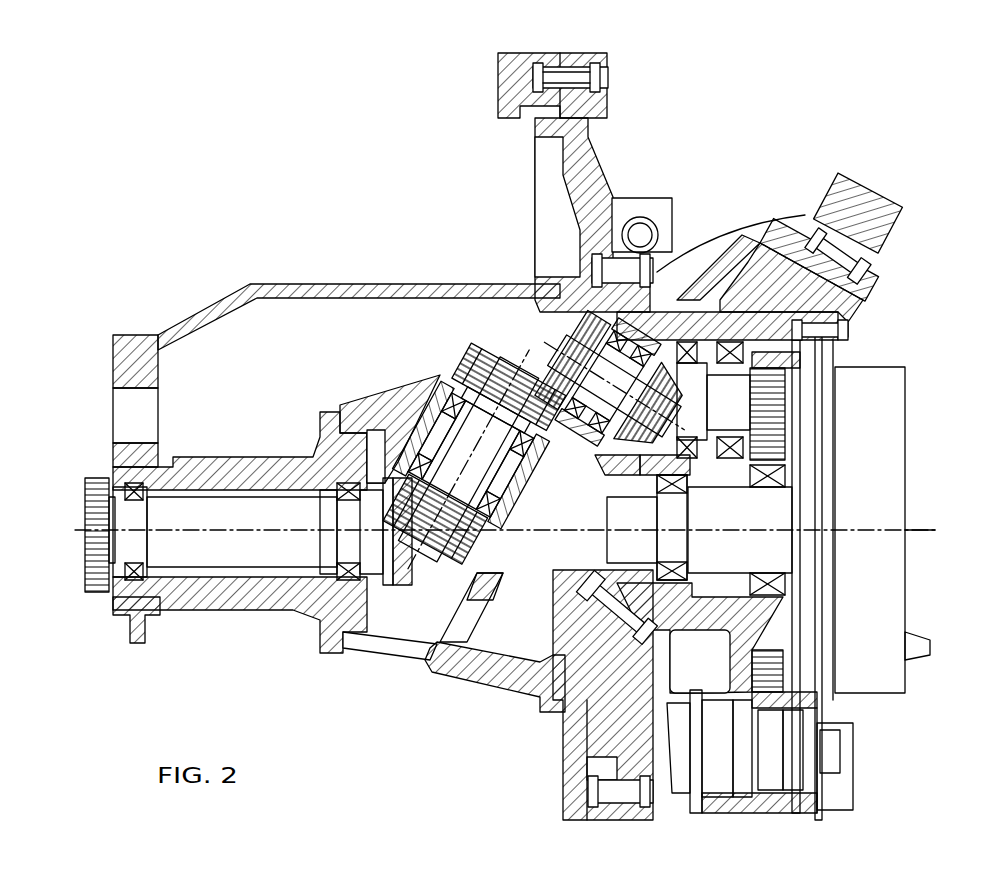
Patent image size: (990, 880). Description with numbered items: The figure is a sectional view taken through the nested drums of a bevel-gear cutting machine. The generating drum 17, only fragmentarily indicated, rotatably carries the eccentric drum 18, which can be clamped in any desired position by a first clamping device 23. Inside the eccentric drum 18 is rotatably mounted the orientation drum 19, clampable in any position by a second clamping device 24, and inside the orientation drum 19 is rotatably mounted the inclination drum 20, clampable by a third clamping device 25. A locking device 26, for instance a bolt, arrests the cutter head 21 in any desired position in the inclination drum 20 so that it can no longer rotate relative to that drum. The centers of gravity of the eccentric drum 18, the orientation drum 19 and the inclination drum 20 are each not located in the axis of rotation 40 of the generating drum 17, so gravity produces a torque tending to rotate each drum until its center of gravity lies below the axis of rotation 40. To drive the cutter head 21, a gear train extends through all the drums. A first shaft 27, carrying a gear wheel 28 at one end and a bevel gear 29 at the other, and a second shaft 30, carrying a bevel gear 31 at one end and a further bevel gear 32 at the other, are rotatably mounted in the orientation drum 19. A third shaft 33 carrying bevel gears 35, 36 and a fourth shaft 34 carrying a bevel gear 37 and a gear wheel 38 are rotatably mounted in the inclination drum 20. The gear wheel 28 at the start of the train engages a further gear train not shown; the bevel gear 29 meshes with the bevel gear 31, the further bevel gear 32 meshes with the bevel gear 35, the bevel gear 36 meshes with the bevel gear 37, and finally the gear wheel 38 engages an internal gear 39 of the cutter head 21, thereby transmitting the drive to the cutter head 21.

The generating drum 17 is at (500, 70).
The eccentric drum 18 is at (600, 160).
The orientation drum 19 is at (222, 456).
The inclination drum 20 is at (862, 303).
The cutter head 21 is at (908, 498).
The first clamping device 23 is at (610, 80).
The second clamping device 24 is at (655, 270).
The third clamping device 25 is at (875, 262).
The locking device 26 is at (850, 330).
The first shaft 27 is at (232, 556).
The gear wheel 28 is at (95, 593).
The bevel gear 29 is at (403, 577).
The second shaft 30 is at (515, 470).
The bevel gear 31 is at (452, 518).
The further bevel gear 32 is at (470, 358).
The third shaft 33 is at (548, 425).
The fourth shaft 34 is at (805, 400).
The bevel gear 35 is at (565, 345).
The bevel gear 36 is at (620, 430).
The bevel gear 37 is at (650, 470).
The gear wheel 38 is at (782, 420).
The internal gear 39 is at (805, 358).
The axis of rotation 40 is at (922, 535).